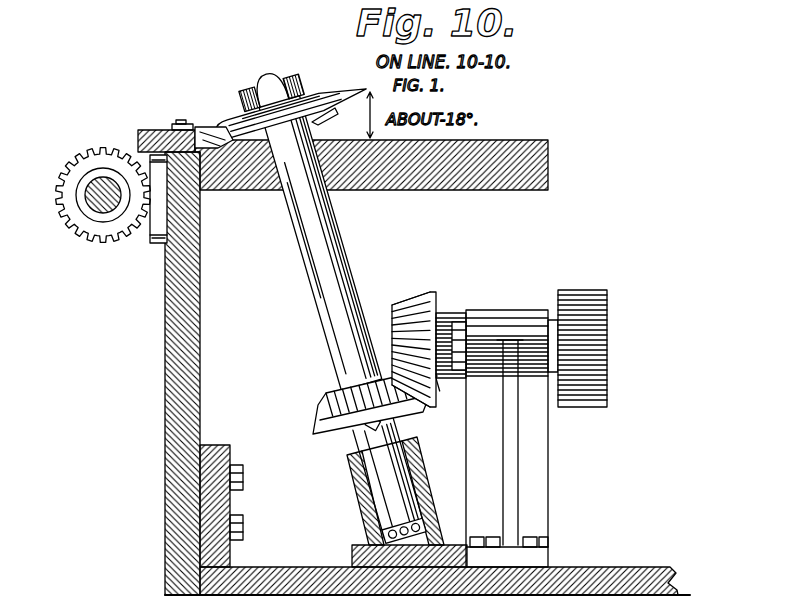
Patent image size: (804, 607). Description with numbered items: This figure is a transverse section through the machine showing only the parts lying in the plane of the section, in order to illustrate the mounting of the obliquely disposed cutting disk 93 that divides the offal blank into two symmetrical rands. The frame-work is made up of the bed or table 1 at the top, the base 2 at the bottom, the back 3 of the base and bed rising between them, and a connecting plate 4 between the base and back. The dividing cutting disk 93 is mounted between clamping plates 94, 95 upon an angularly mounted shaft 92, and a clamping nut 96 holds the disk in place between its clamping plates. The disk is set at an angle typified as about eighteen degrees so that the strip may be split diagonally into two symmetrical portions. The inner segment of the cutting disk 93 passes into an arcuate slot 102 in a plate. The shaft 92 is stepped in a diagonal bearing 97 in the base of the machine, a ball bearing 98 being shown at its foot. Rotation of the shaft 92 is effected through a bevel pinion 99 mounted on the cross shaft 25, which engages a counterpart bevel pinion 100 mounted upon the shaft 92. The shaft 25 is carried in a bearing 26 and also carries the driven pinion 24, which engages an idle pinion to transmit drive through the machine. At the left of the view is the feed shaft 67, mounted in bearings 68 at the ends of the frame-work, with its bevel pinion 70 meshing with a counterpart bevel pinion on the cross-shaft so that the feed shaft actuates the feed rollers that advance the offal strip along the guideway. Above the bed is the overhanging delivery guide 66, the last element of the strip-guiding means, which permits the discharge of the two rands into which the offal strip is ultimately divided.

The bed or table 1 is at (548, 172).
The base 2 is at (610, 580).
The back 3 is at (165, 357).
The connecting plate 4 is at (216, 512).
The driven pinion 24 is at (590, 335).
The shaft 25 is at (460, 328).
The bearing 26 is at (500, 320).
The overhanging delivery guide 66 is at (207, 127).
The feed shaft 67 is at (90, 205).
The bearings 68 is at (152, 246).
The bevel pinion 70 is at (75, 178).
The angularly mounted shaft 92 is at (325, 270).
The dividing cutting disk 93 is at (327, 98).
The clamping plate 94 is at (318, 90).
The clamping plate 95 is at (322, 112).
The clamping nut 96 is at (273, 95).
The diagonal bearing 97 is at (360, 484).
The ball bearing 98 is at (372, 541).
The bevel pinion 99 is at (407, 315).
The bevel pinion 100 is at (138, 137).
The arcuate slot 102 is at (176, 127).